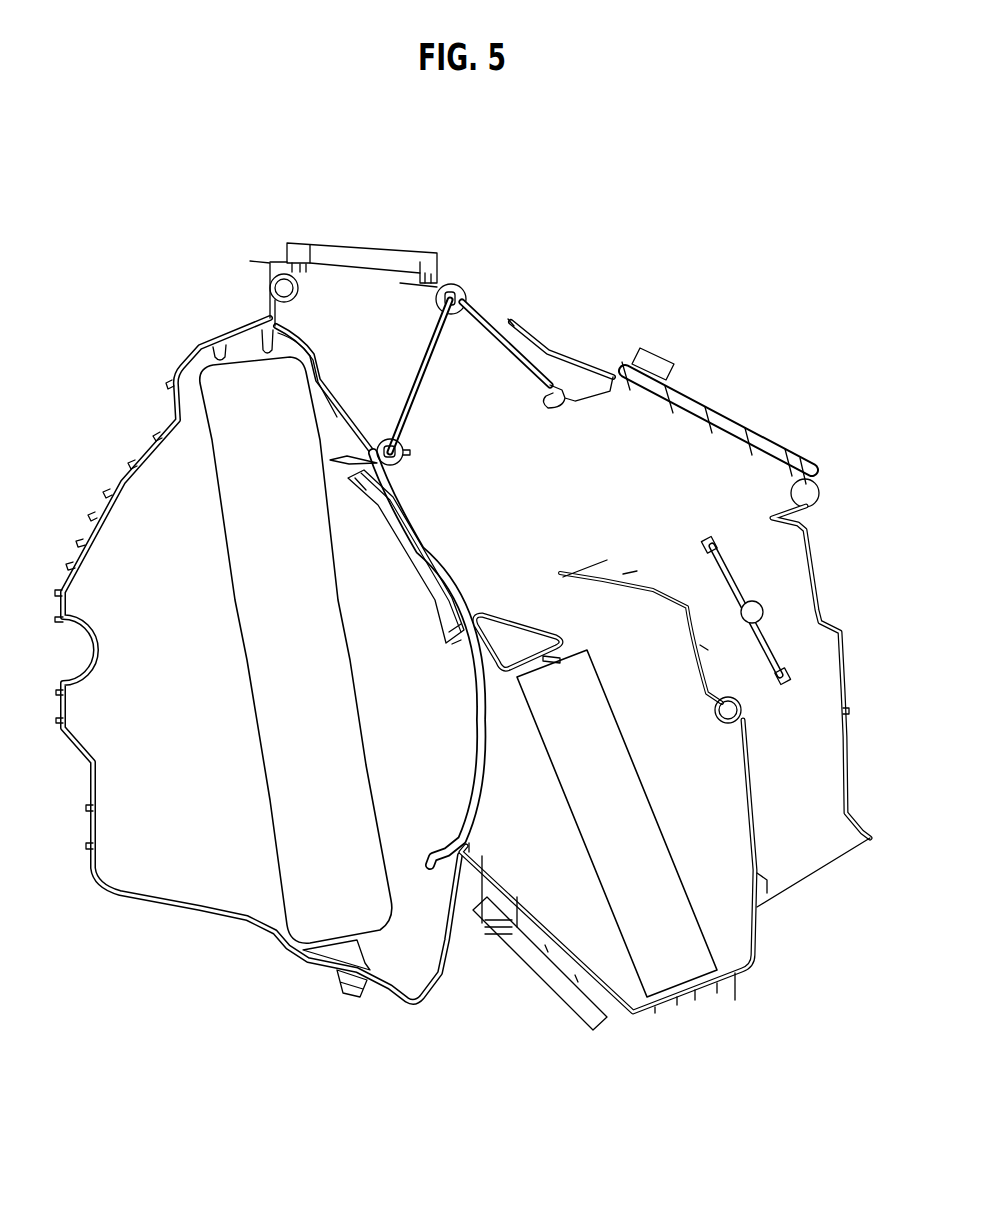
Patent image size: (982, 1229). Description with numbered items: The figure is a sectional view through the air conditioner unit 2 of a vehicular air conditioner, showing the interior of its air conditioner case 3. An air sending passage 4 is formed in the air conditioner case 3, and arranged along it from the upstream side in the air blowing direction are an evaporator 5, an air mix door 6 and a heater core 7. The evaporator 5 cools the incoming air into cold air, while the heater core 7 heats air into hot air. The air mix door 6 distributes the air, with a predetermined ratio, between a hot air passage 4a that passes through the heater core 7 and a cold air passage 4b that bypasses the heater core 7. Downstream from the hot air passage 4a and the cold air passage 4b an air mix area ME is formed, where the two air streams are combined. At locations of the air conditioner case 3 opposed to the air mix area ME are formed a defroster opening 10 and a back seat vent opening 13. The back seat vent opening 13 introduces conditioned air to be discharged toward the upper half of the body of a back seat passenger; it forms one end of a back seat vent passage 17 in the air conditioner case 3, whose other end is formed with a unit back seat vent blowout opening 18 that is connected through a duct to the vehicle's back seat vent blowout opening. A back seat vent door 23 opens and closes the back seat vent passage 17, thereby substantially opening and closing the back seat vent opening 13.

The air conditioner unit 2 is at (86, 345).
The air conditioner case 3 is at (97, 513).
The air sending passage 4 is at (147, 700).
The hot air passage 4a is at (700, 847).
The cold air passage 4b is at (440, 507).
The evaporator 5 is at (280, 822).
The air mix door 6 is at (437, 613).
The heater core 7 is at (650, 968).
The defroster opening 10 is at (366, 252).
The back seat vent opening 13 is at (733, 530).
The back seat vent passage 17 is at (817, 730).
The unit back seat vent blowout opening 18 is at (828, 857).
The back seat vent door 23 is at (777, 643).
The air mix area ME is at (533, 510).